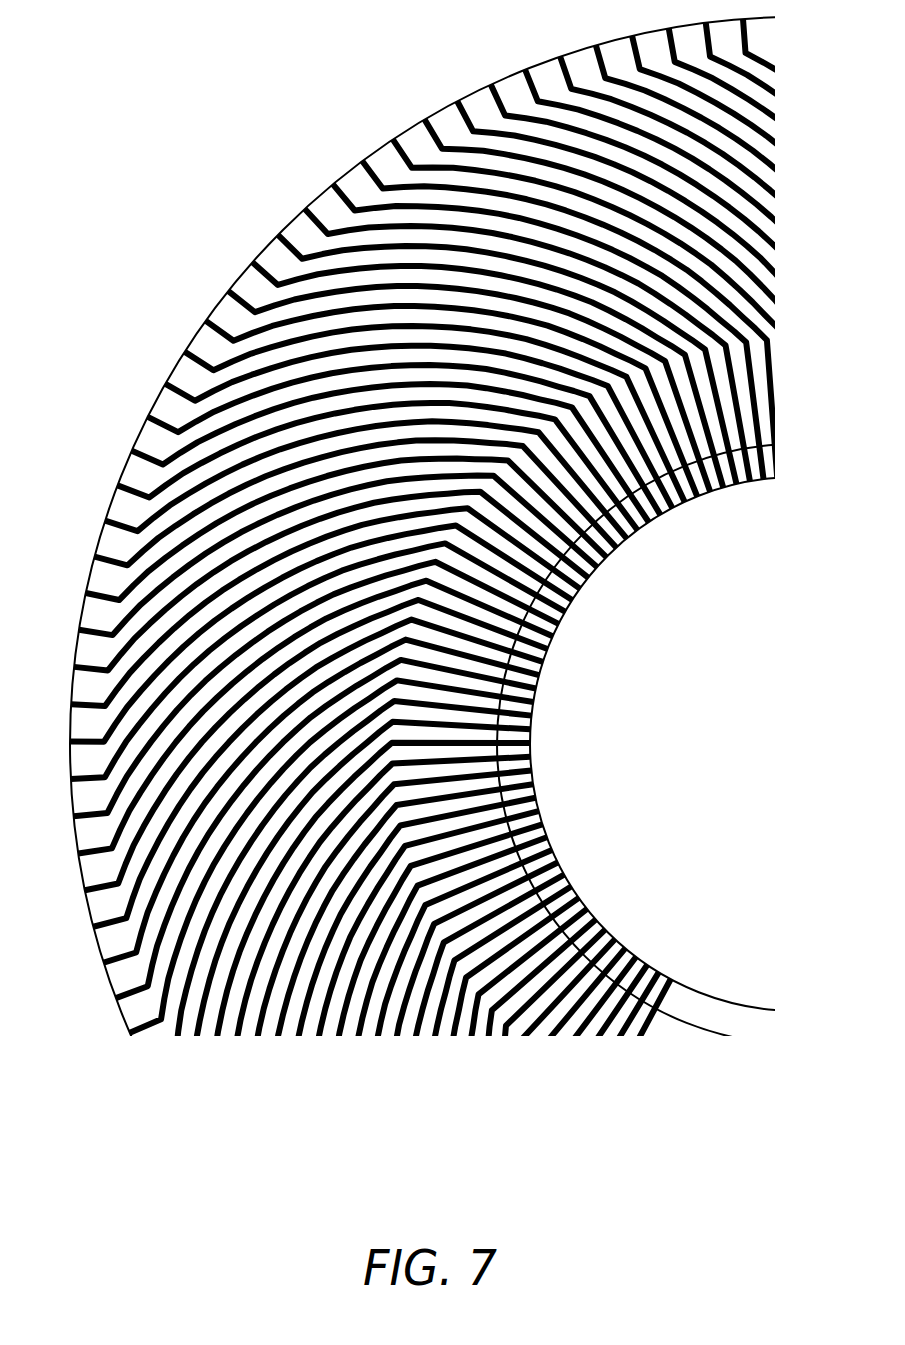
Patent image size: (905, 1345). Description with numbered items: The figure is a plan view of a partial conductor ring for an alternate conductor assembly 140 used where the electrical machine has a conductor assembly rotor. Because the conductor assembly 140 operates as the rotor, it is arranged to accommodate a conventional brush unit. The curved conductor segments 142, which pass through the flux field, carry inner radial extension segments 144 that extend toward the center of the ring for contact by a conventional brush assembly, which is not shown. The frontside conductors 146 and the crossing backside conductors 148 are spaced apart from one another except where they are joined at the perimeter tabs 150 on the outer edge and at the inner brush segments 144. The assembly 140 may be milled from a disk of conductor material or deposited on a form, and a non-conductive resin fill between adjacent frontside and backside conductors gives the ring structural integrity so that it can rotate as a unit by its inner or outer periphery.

The conductor assembly 140 is at (471, 672).
The curved conductor segments 142 is at (523, 117).
The inner radial extension segments 144 is at (588, 577).
The frontside conductors 146 is at (313, 265).
The crossing backside conductors 148 is at (300, 287).
The perimeter tabs 150 is at (186, 346).